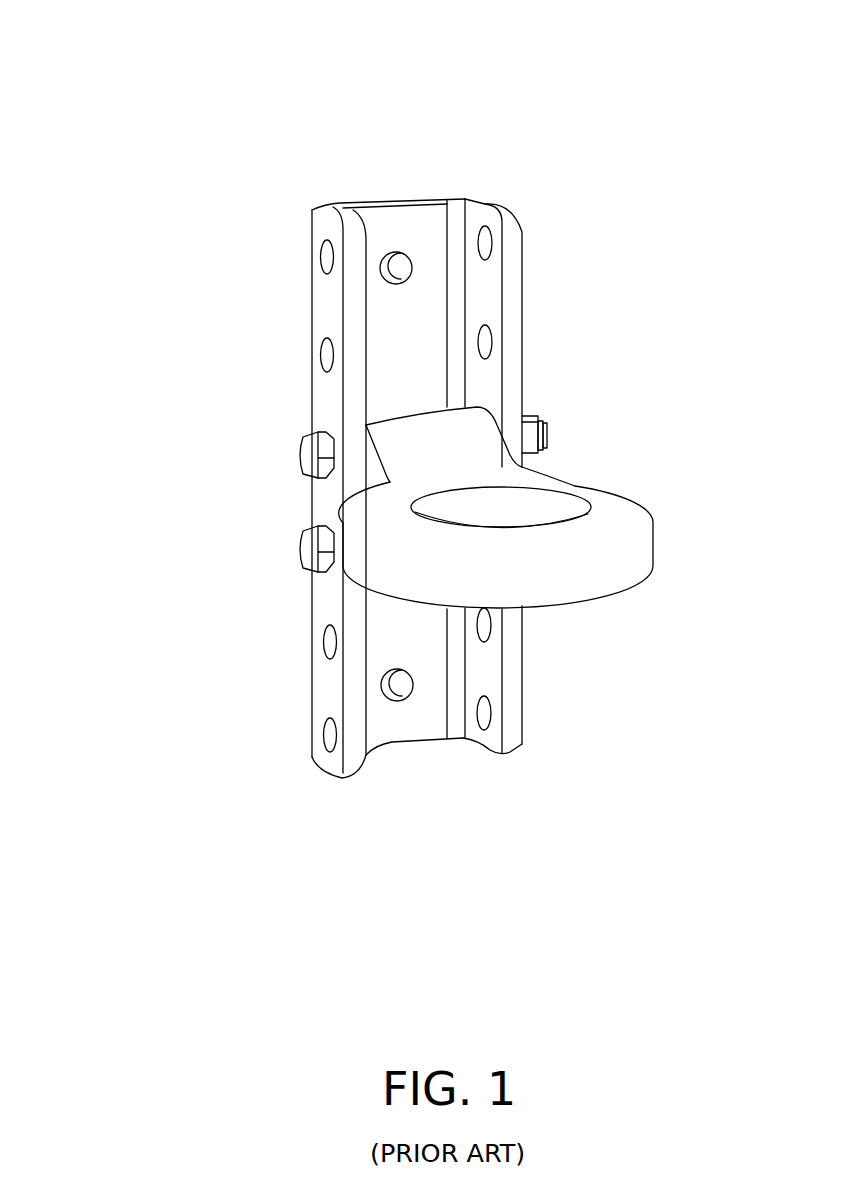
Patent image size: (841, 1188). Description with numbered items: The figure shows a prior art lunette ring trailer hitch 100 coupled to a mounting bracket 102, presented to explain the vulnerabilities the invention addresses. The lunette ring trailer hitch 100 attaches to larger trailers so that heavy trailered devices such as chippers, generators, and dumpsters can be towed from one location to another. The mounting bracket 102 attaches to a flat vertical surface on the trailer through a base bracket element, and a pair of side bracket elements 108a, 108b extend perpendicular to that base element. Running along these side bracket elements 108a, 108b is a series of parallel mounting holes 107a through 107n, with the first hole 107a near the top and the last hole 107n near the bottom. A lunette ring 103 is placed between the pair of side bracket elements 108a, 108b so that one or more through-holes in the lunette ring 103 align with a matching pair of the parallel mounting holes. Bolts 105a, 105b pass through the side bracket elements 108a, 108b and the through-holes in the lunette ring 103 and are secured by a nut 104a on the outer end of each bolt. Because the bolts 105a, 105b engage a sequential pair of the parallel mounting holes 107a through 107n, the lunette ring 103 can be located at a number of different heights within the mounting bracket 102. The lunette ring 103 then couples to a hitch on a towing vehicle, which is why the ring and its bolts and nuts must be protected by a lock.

The lunette ring trailer hitch 100 is at (200, 58).
The mounting bracket 102 is at (507, 226).
The lunette ring 103 is at (608, 498).
The nut 104a is at (545, 426).
The bolt 105a is at (310, 458).
The bolt 105b is at (310, 550).
The mounting hole 107a is at (327, 256).
The mounting hole 107n is at (487, 712).
The side bracket element 108a is at (330, 321).
The side bracket element 108b is at (488, 299).